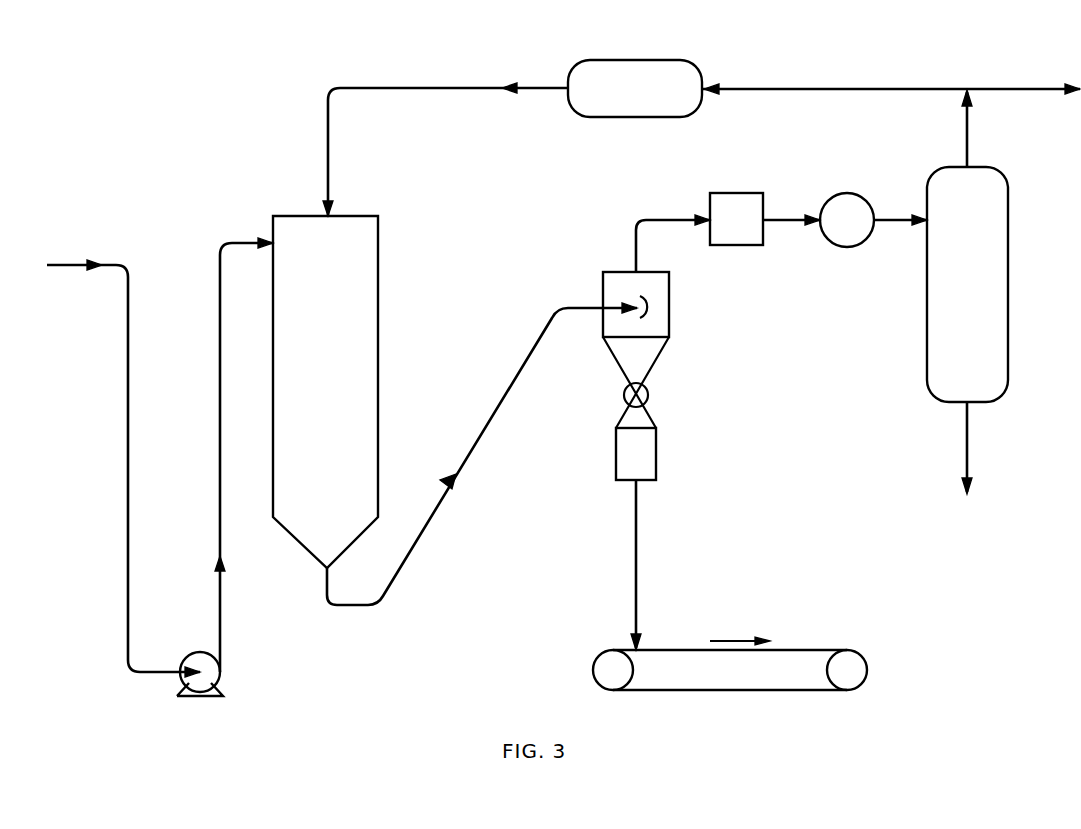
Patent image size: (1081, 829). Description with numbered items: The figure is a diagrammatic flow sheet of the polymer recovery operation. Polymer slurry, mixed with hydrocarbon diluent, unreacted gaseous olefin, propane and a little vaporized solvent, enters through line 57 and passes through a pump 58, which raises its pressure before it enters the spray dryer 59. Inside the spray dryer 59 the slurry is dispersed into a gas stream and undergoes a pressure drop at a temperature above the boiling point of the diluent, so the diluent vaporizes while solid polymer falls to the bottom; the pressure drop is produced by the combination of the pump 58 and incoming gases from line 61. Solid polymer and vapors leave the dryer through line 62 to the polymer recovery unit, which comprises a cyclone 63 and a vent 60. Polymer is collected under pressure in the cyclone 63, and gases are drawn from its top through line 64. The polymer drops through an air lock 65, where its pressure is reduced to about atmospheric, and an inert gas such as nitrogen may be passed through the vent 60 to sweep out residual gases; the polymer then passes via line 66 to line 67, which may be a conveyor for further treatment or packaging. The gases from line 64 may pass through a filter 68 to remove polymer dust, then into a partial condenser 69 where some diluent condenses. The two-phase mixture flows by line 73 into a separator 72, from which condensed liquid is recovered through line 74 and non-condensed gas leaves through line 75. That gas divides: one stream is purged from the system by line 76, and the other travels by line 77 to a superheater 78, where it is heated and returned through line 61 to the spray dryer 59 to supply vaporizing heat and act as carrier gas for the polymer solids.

The line 57 is at (127, 335).
The pump 58 is at (218, 673).
The spray dryer 59 is at (336, 397).
The vent 60 is at (657, 456).
The line 61 is at (378, 88).
The line 62 is at (502, 394).
The cyclone 63 is at (672, 313).
The line 64 is at (634, 240).
The air lock 65 is at (649, 393).
The line 66 is at (632, 540).
The line 67 is at (830, 645).
The filter 68 is at (746, 192).
The partial condenser 69 is at (847, 193).
The separator 72 is at (979, 302).
The line 73 is at (903, 222).
The line 74 is at (970, 448).
The line 75 is at (970, 142).
The line 76 is at (1008, 88).
The line 77 is at (815, 88).
The superheater 78 is at (648, 100).